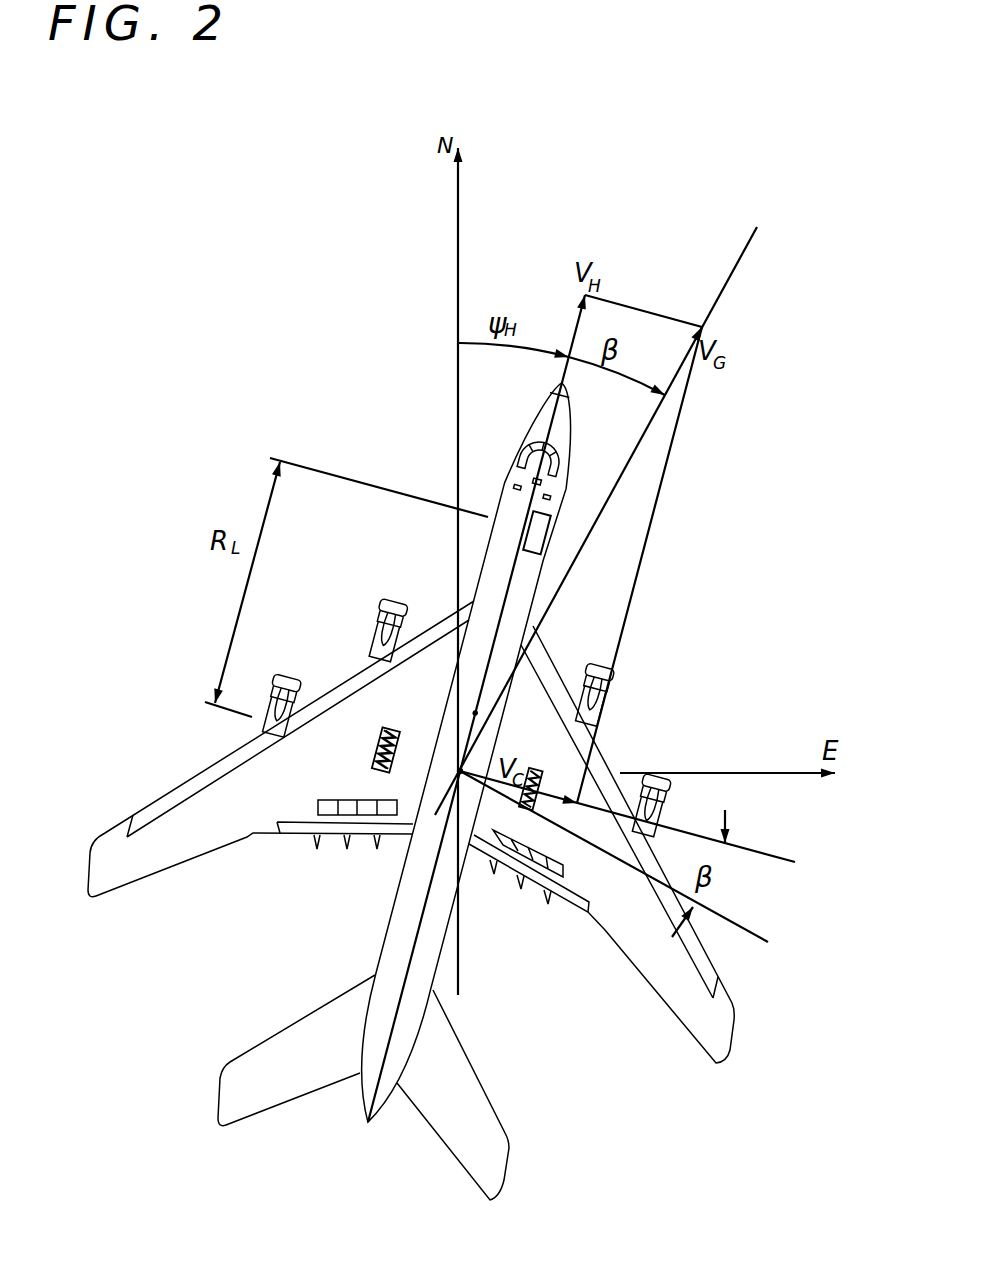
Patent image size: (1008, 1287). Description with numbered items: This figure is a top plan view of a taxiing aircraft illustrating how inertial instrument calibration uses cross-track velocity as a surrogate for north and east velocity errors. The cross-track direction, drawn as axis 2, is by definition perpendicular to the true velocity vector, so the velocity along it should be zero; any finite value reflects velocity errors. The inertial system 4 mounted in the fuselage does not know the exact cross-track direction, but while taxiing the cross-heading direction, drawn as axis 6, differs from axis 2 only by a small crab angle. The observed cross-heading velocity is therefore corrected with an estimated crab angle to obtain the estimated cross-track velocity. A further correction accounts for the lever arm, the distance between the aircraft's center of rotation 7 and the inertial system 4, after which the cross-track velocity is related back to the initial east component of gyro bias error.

The cross-track axis 2 is at (770, 942).
The inertial system 4 is at (541, 533).
The cross-heading axis 6 is at (795, 858).
The center of rotation 7 is at (446, 772).